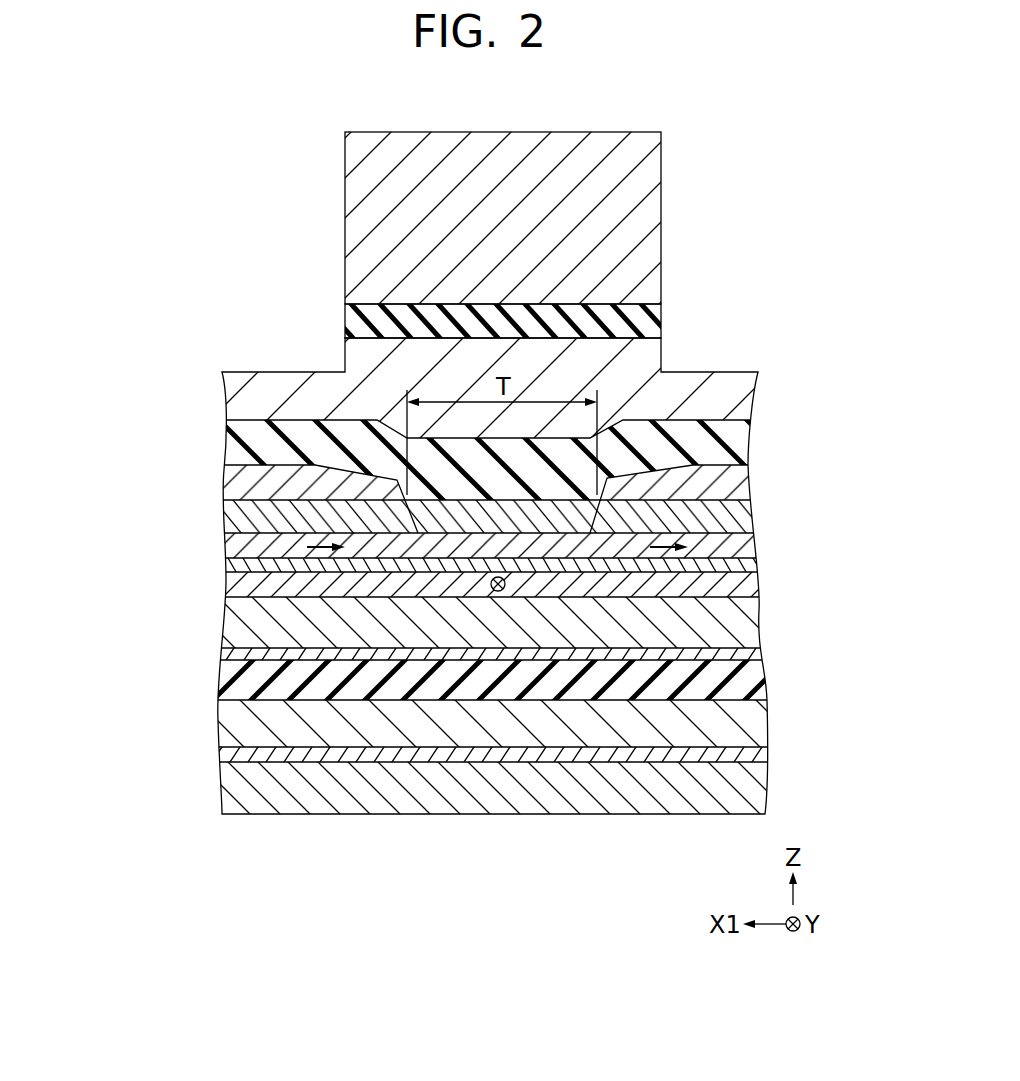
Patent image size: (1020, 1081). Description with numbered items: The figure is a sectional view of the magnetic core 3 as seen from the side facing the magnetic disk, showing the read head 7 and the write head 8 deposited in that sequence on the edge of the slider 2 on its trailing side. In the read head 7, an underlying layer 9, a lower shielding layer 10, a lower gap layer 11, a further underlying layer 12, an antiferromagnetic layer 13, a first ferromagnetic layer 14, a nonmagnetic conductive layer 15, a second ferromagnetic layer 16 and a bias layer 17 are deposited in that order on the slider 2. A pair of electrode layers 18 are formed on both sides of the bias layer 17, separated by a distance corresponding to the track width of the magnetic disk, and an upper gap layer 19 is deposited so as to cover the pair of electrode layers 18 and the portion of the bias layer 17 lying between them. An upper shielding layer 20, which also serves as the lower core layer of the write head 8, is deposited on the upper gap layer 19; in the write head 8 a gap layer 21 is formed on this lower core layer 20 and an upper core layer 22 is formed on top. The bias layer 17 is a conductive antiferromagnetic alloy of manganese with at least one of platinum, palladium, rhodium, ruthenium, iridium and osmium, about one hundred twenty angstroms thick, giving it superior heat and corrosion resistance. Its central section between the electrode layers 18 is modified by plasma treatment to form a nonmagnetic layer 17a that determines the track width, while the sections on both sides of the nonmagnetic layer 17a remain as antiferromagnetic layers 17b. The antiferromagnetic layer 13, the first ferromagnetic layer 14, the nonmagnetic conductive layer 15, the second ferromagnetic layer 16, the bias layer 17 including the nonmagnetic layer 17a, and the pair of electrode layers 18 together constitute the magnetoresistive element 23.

The slider 2 is at (745, 790).
The magnetic core 3 is at (64, 133).
The read head 7 is at (105, 400).
The write head 8 is at (105, 133).
The underlying layer 9 is at (740, 757).
The lower shielding layer 10 is at (745, 718).
The lower gap layer 11 is at (740, 690).
The underlying layer 12 is at (740, 652).
The antiferromagnetic layer 13 is at (740, 617).
The first ferromagnetic layer 14 is at (740, 590).
The nonmagnetic conductive layer 15 is at (740, 565).
The second ferromagnetic layer 16 is at (745, 543).
The bias layer 17 is at (520, 683).
The nonmagnetic layer 17a is at (541, 519).
The antiferromagnetic layers 17b is at (740, 508).
The electrode layers 18 is at (735, 477).
The upper gap layer 19 is at (735, 433).
The upper shielding layer 20 is at (730, 388).
The gap layer 21 is at (630, 313).
The upper core layer 22 is at (613, 218).
The magnetoresistive element 23 is at (159, 468).